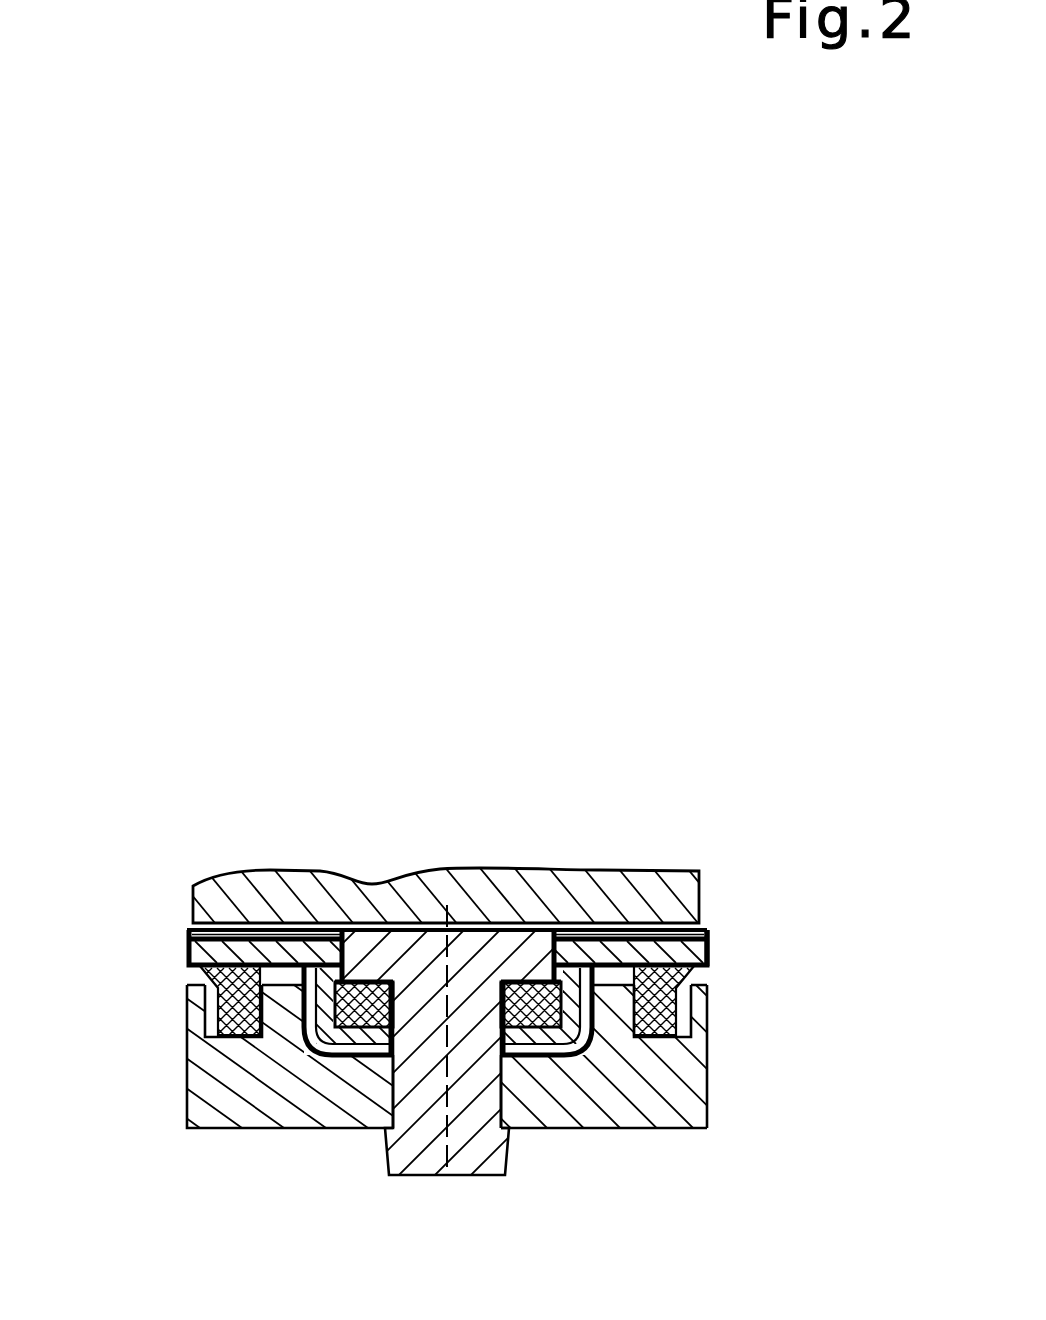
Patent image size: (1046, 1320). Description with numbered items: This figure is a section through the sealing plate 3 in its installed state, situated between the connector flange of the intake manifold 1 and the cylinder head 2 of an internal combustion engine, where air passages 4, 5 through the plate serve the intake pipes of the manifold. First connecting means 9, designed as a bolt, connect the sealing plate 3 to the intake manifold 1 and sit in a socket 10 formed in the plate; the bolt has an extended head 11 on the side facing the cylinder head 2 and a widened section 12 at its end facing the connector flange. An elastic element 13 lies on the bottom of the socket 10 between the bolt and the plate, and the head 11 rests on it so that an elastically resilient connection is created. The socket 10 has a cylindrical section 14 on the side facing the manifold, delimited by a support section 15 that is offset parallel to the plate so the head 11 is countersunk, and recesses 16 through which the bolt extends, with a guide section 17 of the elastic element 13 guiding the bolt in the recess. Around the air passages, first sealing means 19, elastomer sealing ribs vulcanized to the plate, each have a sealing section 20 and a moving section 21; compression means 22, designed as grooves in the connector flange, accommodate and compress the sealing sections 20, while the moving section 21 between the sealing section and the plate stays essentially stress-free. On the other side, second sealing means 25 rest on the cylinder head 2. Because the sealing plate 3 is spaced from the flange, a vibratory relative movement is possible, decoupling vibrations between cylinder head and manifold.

The intake manifold 1 is at (572, 1105).
The cylinder head 2 is at (565, 907).
The sealing plate 3 is at (333, 1047).
The air passage 4 is at (172, 965).
The air passage 5 is at (723, 1087).
The first connecting means 9 is at (421, 1158).
The socket 10 is at (342, 927).
The head 11 is at (466, 953).
The widened section 12 is at (468, 1150).
The elastic element 13 is at (700, 930).
The cylindrical section 14 is at (305, 1045).
The support section 15 is at (362, 1035).
The recess 16 is at (608, 1115).
The guide section 17 is at (510, 1063).
The first sealing means 19 is at (215, 1008).
The sealing section 20 is at (690, 1032).
The moving section 21 is at (708, 960).
The compression means 22 is at (240, 1003).
The second sealing means 25 is at (193, 922).